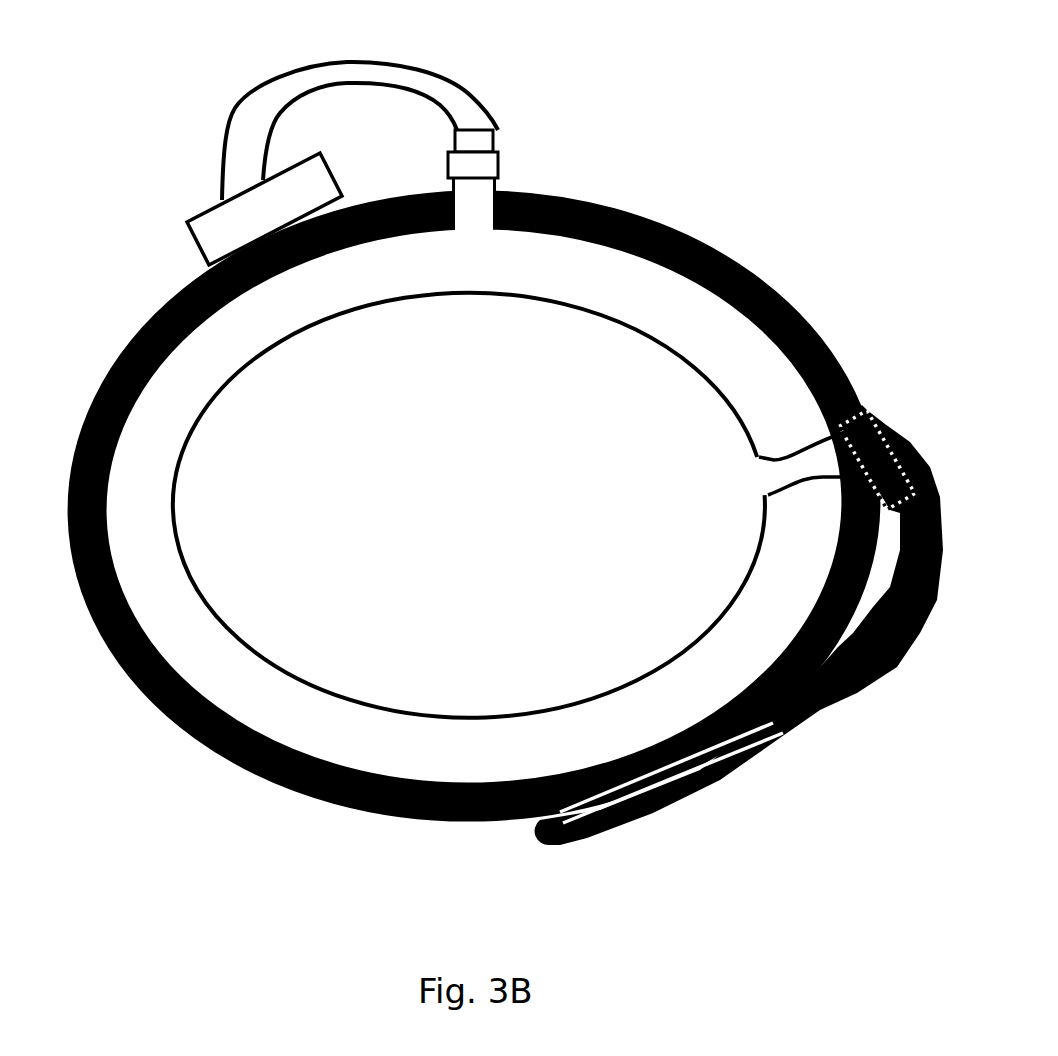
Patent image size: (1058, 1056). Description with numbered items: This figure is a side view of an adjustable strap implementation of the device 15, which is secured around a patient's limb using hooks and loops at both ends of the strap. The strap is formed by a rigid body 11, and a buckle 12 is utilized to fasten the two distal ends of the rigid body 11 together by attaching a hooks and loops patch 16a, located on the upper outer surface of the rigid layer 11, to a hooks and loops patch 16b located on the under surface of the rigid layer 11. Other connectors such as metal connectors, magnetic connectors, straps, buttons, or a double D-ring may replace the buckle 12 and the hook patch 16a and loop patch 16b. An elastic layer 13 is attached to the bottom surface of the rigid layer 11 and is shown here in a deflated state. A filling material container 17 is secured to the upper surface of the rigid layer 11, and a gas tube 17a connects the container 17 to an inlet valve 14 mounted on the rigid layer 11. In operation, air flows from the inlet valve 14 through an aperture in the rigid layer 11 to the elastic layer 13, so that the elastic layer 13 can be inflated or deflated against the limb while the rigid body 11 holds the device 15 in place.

The rigid body 11 is at (765, 281).
The buckle 12 is at (877, 416).
The elastic layer 13 is at (520, 270).
The inlet valve 14 is at (498, 147).
The device 15 is at (136, 120).
The hooks and loops patch 16a is at (733, 743).
The hooks and loops patch 16b is at (673, 778).
The filling material container 17 is at (187, 224).
The gas tube 17a is at (393, 63).